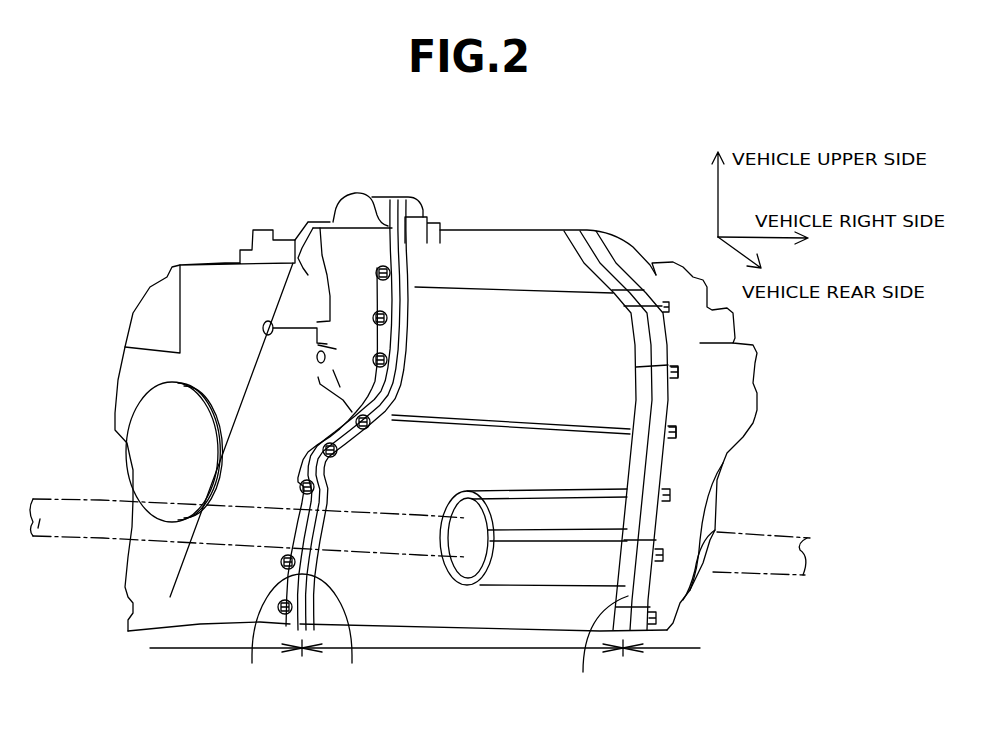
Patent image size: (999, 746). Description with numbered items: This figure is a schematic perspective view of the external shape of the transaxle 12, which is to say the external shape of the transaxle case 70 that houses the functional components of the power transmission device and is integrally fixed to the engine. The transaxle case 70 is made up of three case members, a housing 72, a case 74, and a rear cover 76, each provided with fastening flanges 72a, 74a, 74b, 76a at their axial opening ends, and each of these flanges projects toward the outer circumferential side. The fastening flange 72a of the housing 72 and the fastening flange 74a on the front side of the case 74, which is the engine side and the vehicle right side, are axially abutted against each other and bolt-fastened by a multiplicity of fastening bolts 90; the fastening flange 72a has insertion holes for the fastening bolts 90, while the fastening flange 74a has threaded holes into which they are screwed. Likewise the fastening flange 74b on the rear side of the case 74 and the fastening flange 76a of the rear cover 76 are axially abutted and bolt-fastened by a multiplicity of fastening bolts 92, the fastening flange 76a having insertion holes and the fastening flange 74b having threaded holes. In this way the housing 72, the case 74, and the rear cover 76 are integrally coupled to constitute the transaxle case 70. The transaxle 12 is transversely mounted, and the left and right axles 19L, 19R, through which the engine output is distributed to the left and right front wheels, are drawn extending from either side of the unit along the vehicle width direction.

The transaxle 12 is at (200, 176).
The transaxle case 70 is at (558, 194).
The housing 72 is at (627, 452).
The fastening flange 72a is at (670, 453).
The case 74 is at (481, 433).
The fastening flange 74a is at (607, 648).
The fastening flange 74b is at (347, 443).
The rear cover 76 is at (233, 450).
The fastening flange 76a is at (425, 631).
The fastening bolts 90 is at (680, 372).
The fastening bolts 92 is at (376, 272).
The left axle 19L is at (58, 507).
The right axle 19R is at (763, 567).